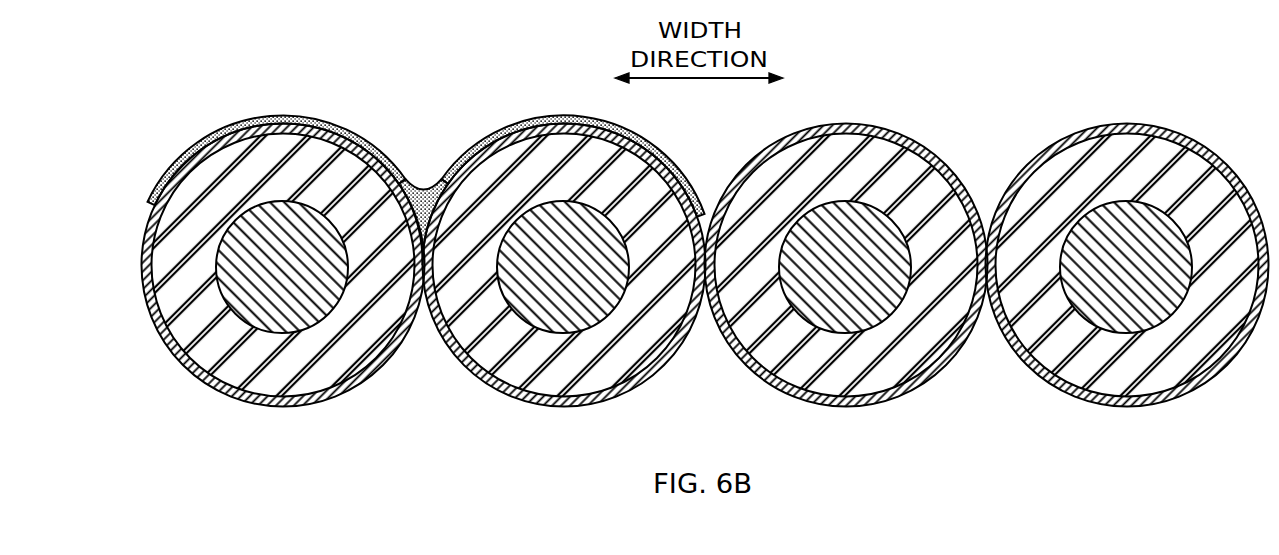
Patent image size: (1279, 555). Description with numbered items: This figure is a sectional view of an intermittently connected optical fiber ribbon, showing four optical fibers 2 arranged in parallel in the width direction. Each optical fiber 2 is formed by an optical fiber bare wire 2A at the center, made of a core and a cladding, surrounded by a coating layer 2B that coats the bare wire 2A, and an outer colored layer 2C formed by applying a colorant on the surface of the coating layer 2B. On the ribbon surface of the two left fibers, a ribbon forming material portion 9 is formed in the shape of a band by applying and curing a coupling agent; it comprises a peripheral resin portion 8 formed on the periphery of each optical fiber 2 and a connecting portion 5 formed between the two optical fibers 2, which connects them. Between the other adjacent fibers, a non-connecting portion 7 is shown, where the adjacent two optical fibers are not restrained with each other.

The optical fiber 2 is at (669, 275).
The optical fiber bare wire 2A is at (240, 324).
The coating layer 2B is at (183, 293).
The colored layer 2C is at (143, 270).
The connecting portion 5 is at (421, 185).
The non-connecting portion 7 is at (702, 370).
The peripheral resin portion 8 is at (269, 116).
The ribbon forming material portion 9 is at (426, 151).